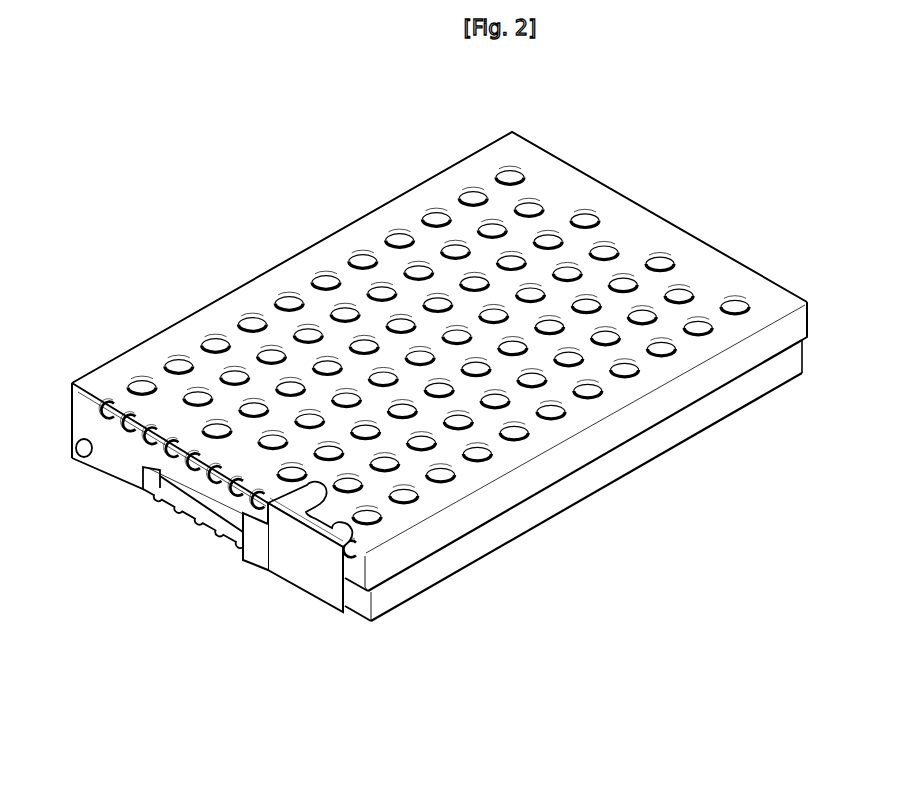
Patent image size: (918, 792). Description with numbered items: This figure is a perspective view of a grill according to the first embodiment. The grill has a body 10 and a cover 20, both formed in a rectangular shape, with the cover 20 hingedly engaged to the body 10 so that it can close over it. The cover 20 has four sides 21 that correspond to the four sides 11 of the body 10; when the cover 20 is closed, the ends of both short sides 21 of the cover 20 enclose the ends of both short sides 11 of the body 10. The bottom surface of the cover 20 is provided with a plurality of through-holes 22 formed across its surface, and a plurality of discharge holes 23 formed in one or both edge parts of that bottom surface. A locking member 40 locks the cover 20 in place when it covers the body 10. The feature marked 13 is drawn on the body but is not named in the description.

The body 10 is at (537, 520).
The sides of the body 11 is at (628, 462).
The serrated groove 13 is at (198, 512).
The cover 20 is at (298, 259).
The sides of the cover 21 is at (715, 377).
The through-holes 22 is at (591, 215).
The discharge holes 23 is at (195, 458).
The locking member 40 is at (298, 565).